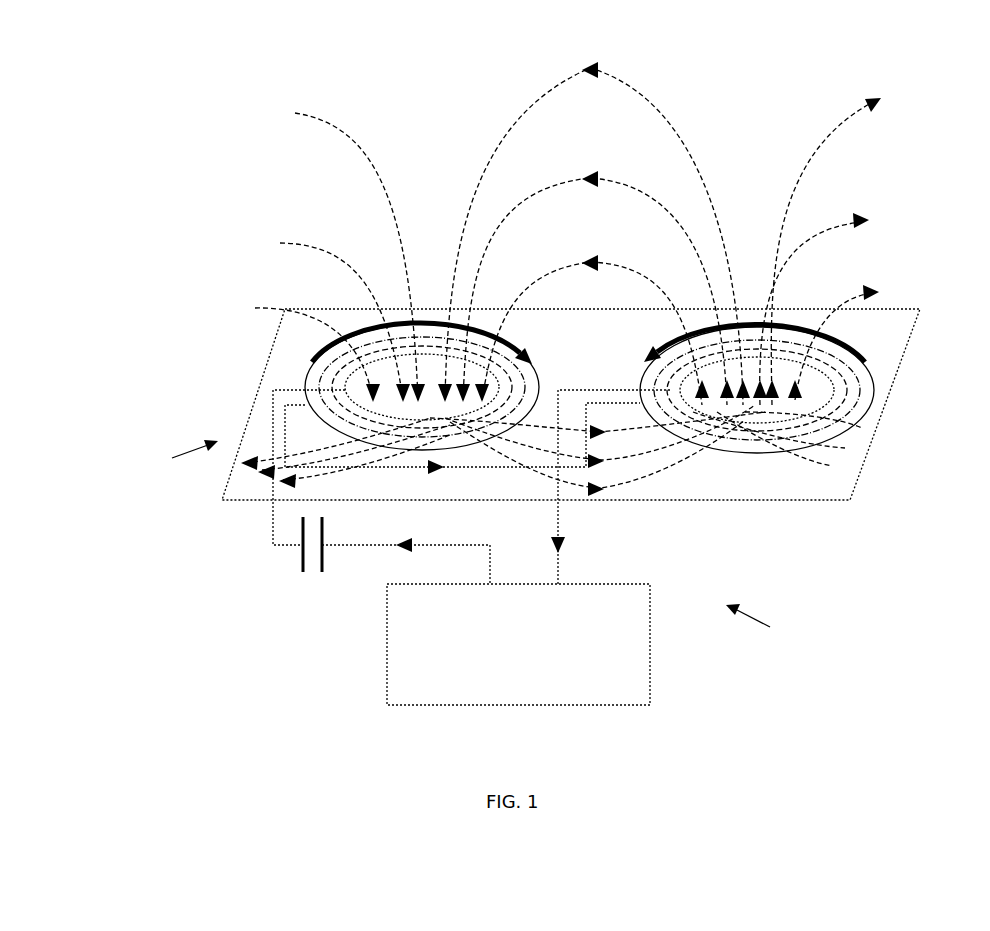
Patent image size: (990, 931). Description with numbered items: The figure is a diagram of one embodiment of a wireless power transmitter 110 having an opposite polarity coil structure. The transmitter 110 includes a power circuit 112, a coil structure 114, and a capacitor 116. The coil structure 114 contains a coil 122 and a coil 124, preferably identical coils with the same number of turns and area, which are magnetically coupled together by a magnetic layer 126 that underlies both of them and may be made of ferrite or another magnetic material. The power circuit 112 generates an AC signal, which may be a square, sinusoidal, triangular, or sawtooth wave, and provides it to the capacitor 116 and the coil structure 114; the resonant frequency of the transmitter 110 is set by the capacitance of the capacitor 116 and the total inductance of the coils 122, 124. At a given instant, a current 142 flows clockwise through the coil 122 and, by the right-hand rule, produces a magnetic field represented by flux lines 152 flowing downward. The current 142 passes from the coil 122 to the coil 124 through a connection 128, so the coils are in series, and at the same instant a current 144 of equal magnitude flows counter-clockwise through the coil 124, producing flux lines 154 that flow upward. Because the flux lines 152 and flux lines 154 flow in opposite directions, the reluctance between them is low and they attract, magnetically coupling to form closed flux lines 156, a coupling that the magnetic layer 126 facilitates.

The transmitter 110 is at (776, 630).
The power circuit 112 is at (385, 648).
The coil structure 114 is at (174, 459).
The capacitor 116 is at (300, 555).
The coil 122 is at (318, 372).
The coil 124 is at (870, 390).
The magnetic layer 126 is at (770, 500).
The connection 128 is at (443, 468).
The current 142 is at (365, 332).
The current 144 is at (843, 345).
The flux lines 152 is at (365, 146).
The flux lines 154 is at (815, 135).
The closed flux lines 156 is at (560, 187).